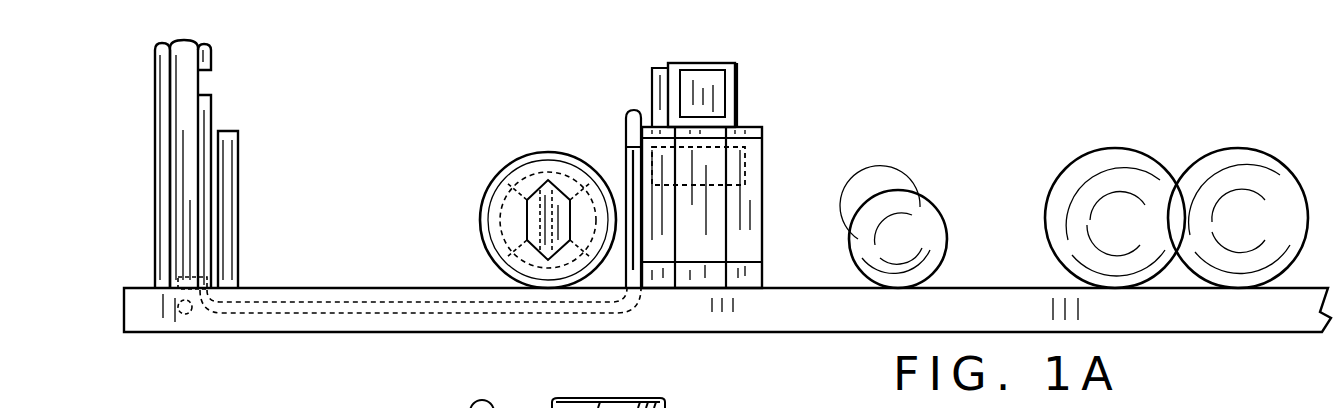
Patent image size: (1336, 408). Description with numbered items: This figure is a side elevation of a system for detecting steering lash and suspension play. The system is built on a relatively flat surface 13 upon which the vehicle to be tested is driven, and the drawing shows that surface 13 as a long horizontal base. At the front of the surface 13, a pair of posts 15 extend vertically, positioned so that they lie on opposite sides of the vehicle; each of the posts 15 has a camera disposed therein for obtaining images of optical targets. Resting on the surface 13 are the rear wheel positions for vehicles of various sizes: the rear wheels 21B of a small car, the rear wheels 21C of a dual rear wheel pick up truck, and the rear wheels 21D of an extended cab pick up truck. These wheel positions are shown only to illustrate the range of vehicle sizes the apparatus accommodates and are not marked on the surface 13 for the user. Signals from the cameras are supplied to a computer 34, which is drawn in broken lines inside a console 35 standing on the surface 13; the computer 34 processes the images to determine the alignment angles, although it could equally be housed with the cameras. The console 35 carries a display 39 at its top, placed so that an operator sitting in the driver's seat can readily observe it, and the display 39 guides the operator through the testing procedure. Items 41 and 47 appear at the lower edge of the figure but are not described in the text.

The flat surface 13 is at (996, 286).
The posts 15 is at (211, 52).
The rear wheels 21B is at (909, 191).
The rear wheels 21C is at (1120, 145).
The rear wheels 21D is at (1232, 145).
The computer 34 is at (745, 158).
The console 35 is at (762, 233).
The display 39 is at (736, 82).
The lower element 41 is at (530, 392).
The lower roller 47 is at (468, 402).